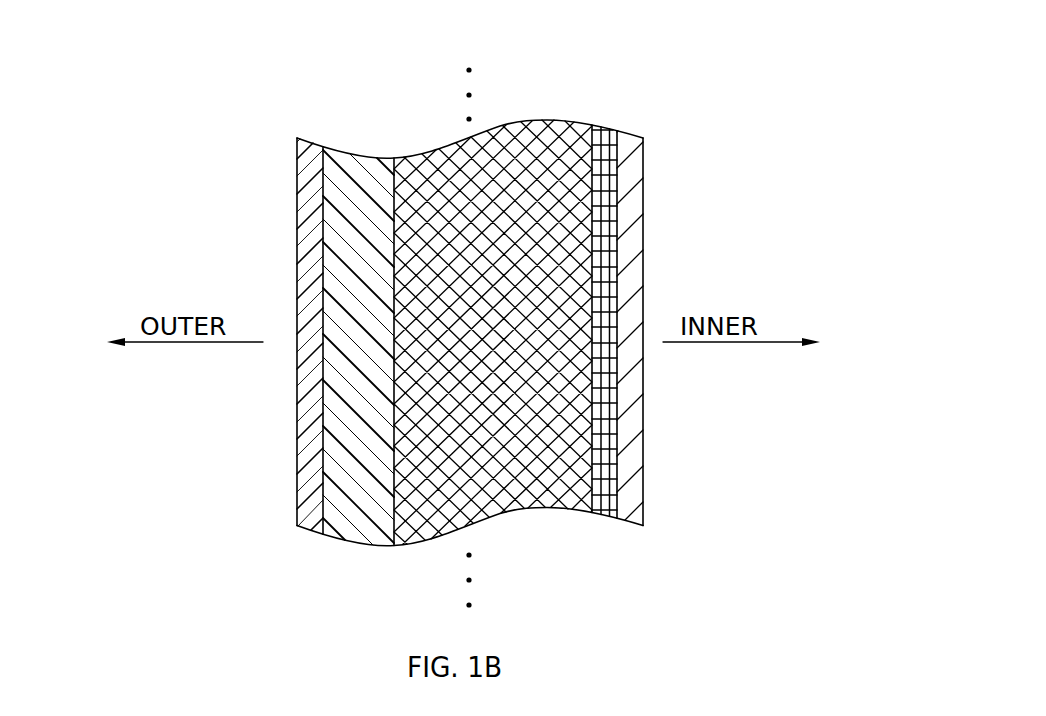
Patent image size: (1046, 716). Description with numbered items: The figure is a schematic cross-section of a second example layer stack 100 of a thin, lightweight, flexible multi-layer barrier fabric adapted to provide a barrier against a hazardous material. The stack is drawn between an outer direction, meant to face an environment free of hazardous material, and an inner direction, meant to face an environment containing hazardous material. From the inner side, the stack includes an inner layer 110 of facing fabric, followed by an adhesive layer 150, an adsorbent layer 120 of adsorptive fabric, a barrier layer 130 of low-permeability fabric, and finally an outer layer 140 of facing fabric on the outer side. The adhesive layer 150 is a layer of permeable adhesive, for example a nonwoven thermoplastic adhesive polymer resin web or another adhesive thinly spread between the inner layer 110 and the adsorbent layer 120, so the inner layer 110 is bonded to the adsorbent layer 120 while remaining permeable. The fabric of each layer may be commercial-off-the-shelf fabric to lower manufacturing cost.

The laminate structure 100 is at (667, 31).
The inner layer 110 is at (643, 172).
The adsorbent layer 120 is at (503, 124).
The barrier layer 130 is at (347, 153).
The outer layer 140 is at (297, 183).
The adhesive layer 150 is at (608, 127).